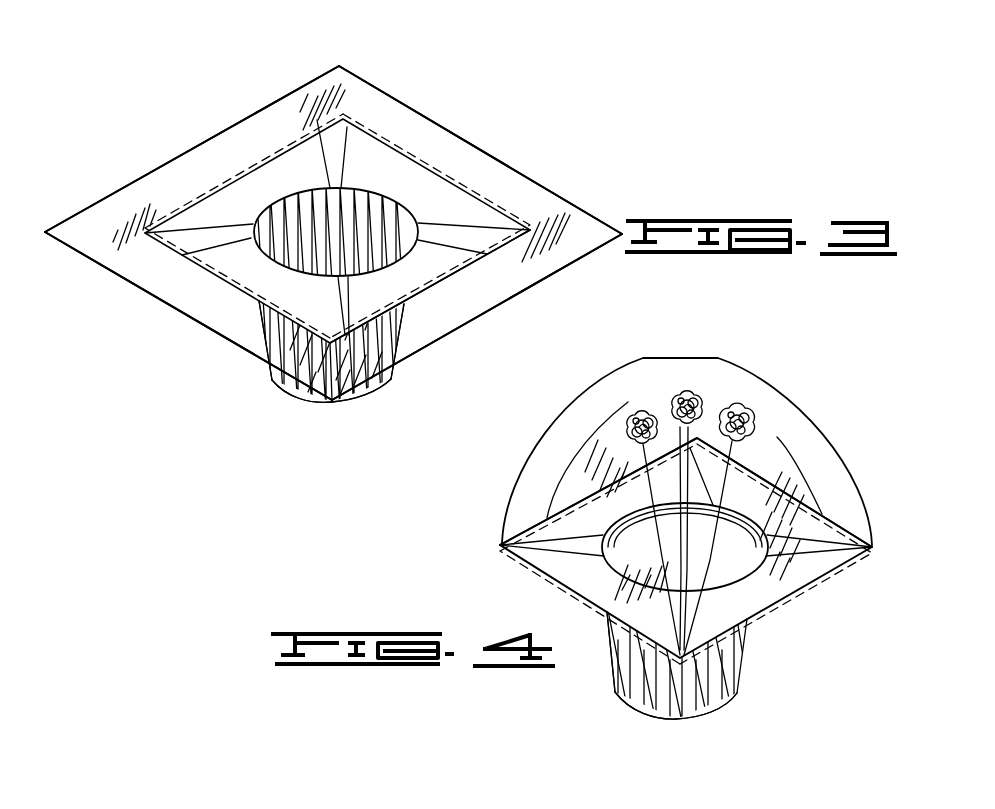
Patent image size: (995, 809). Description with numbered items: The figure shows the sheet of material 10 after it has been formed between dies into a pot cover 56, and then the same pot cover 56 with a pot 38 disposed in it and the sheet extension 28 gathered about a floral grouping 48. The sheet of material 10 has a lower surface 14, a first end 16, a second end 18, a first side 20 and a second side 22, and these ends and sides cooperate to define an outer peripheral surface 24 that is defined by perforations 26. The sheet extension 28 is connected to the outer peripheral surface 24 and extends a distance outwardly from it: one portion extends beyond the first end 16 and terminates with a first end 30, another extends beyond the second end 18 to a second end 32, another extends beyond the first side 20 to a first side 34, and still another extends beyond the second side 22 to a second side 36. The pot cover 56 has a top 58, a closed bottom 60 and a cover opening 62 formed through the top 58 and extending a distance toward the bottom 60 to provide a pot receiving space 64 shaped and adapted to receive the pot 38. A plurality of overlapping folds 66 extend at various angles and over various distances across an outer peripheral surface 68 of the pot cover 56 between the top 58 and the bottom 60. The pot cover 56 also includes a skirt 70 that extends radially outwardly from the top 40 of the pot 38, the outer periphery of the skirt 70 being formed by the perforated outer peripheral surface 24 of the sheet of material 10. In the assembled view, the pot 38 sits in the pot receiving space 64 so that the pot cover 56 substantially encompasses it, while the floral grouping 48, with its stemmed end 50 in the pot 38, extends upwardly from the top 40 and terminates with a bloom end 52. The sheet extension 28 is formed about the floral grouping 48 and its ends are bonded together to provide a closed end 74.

In FIG. 3, the sheet of material 10 is at (259, 372).
In FIG. 4, the sheet of material 10 is at (749, 684).
In FIG. 3, the lower surface 14 is at (263, 333).
In FIG. 3, the first end 16 is at (257, 112).
In FIG. 3, the second end 18 is at (486, 258).
In FIG. 3, the first side 20 is at (452, 180).
In FIG. 3, the second side 22 is at (380, 390).
In FIG. 3, the outer peripheral surface 24 is at (455, 135).
In FIG. 3, the perforations 26 is at (231, 172).
In FIG. 4, the perforations 26 is at (781, 615).
In FIG. 3, the sheet extension 28 is at (408, 342).
In FIG. 4, the sheet extension 28 is at (788, 411).
In FIG. 3, the first end 30 is at (259, 112).
In FIG. 3, the second end 32 is at (498, 308).
In FIG. 3, the first side 34 is at (462, 145).
In FIG. 3, the second side 36 is at (167, 304).
In FIG. 4, the pot 38 is at (572, 506).
In FIG. 4, the top 40 is at (743, 517).
In FIG. 4, the floral grouping 48 is at (711, 397).
In FIG. 4, the stemmed end 50 is at (653, 538).
In FIG. 4, the bloom end 52 is at (635, 410).
In FIG. 3, the pot cover 56 is at (274, 396).
In FIG. 4, the pot cover 56 is at (604, 688).
In FIG. 3, the top 58 is at (412, 155).
In FIG. 4, the top 58 is at (743, 623).
In FIG. 3, the closed bottom 60 is at (352, 402).
In FIG. 4, the closed bottom 60 is at (707, 717).
In FIG. 3, the cover opening 62 is at (390, 270).
In FIG. 3, the pot receiving space 64 is at (337, 216).
In FIG. 3, the overlapping folds 66 is at (293, 402).
In FIG. 3, the outer peripheral surface 68 is at (255, 325).
In FIG. 3, the skirt 70 is at (317, 157).
In FIG. 4, the skirt 70 is at (588, 600).
In FIG. 4, the closed end 74 is at (683, 357).